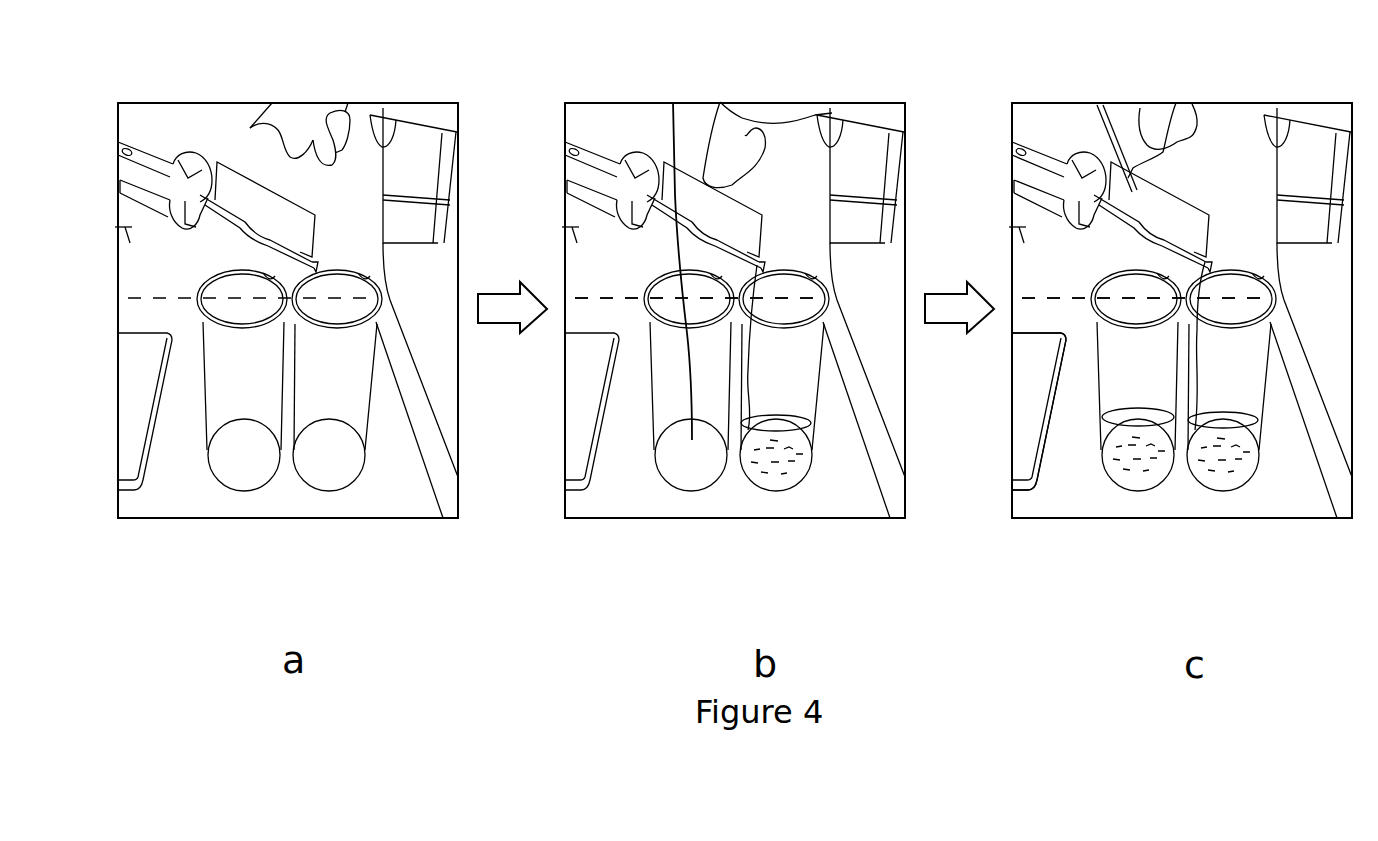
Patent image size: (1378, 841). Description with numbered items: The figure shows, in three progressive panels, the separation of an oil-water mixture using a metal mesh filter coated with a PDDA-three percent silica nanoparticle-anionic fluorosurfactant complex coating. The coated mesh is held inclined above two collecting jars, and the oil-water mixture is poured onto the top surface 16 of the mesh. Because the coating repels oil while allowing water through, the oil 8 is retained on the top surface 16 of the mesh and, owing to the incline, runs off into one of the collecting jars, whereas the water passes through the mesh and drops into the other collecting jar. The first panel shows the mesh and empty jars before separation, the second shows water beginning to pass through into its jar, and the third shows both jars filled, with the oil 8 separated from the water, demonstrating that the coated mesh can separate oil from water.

The oil 8 is at (826, 502).
The top surface 16 is at (1201, 120).